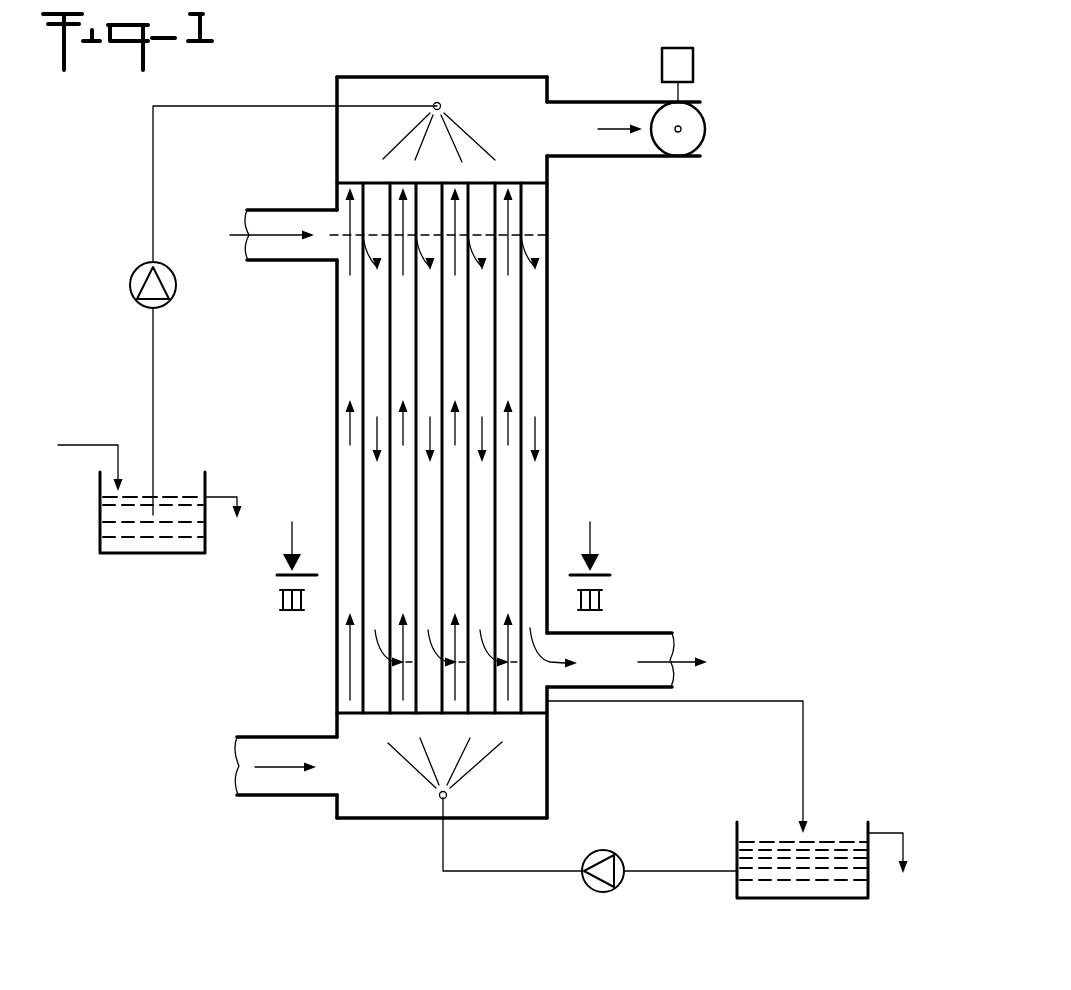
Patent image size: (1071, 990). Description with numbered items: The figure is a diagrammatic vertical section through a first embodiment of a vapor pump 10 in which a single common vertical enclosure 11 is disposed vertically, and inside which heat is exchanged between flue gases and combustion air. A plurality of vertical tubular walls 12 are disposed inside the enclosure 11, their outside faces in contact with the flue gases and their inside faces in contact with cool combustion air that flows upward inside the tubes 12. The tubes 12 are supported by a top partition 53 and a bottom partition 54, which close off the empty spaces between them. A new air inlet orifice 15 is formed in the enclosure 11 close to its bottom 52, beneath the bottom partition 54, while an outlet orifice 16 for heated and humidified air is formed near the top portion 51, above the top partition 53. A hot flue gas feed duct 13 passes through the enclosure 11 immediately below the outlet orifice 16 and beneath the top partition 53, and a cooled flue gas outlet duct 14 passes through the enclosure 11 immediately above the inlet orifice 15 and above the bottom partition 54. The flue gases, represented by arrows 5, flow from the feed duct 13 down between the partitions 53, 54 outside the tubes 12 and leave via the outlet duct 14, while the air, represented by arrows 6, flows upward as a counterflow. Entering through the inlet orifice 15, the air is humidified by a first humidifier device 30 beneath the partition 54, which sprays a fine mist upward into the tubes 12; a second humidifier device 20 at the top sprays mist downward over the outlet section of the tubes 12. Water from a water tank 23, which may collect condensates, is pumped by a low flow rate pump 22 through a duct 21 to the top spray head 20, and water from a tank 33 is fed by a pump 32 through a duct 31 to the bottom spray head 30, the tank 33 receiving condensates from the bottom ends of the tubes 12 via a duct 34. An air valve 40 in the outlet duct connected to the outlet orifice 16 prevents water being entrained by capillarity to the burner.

The flue gases 5 is at (525, 250).
The air 6 is at (508, 272).
The vapor pump 10 is at (364, 62).
The common vertical enclosure 11 is at (337, 348).
The vertical tubular walls 12 is at (405, 518).
The hot flue gas feed duct 13 is at (322, 208).
The cooled flue gas outlet duct 14 is at (642, 632).
The new air inlet orifice 15 is at (335, 812).
The outlet orifice 16 is at (548, 113).
The second humidifier device 20 is at (440, 102).
The duct 21 is at (258, 105).
The low flow rate pump 22 is at (168, 298).
The water tank 23 is at (205, 490).
The first humidifier device 30 is at (438, 795).
The duct 31 is at (520, 872).
The pump 32 is at (622, 860).
The tank 33 is at (760, 898).
The duct 34 is at (736, 700).
The air valve 40 is at (716, 134).
The top portion 51 is at (394, 77).
The bottom 52 is at (545, 818).
The top partition 53 is at (522, 183).
The bottom partition 54 is at (420, 713).